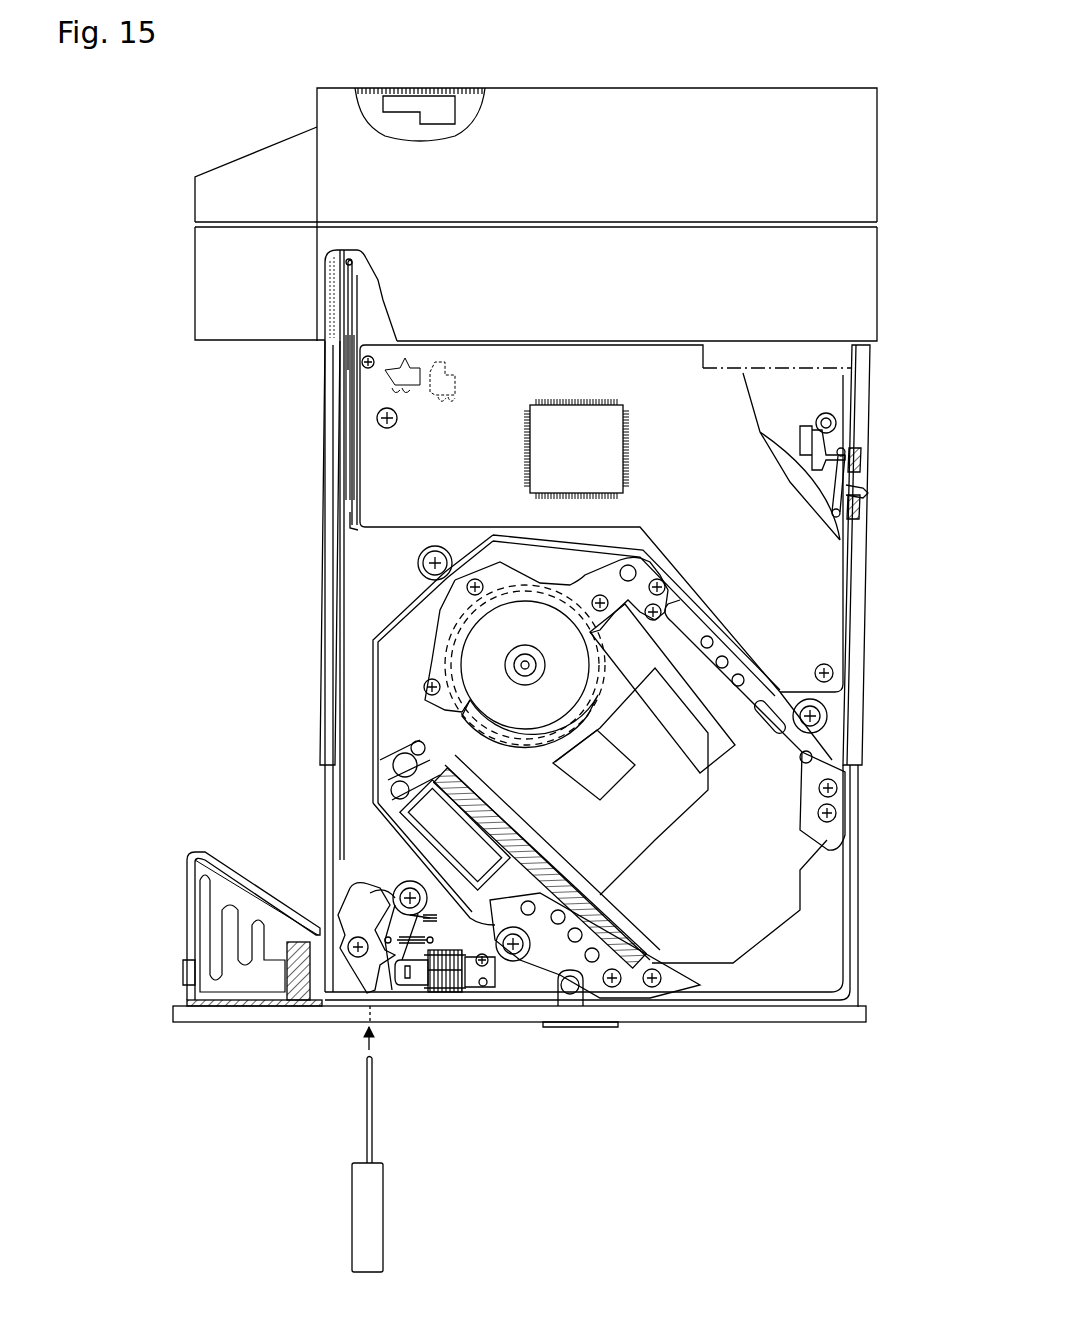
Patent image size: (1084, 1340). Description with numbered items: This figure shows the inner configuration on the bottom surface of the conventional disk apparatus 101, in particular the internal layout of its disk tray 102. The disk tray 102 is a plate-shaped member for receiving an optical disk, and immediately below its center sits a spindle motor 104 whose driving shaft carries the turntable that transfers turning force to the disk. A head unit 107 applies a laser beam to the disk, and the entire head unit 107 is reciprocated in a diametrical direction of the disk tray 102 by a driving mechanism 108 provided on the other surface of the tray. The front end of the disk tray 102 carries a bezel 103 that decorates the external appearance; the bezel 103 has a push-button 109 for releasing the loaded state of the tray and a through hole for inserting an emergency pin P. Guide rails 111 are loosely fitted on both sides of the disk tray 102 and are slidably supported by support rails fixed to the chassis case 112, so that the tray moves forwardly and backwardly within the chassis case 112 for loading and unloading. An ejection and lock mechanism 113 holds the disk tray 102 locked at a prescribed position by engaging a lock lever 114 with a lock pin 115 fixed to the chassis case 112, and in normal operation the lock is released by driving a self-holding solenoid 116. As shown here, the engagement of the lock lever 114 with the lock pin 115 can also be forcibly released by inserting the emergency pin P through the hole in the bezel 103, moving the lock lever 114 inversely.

The disk apparatus 101 is at (875, 583).
The disk tray 102 is at (365, 553).
The bezel 103 is at (510, 1020).
The spindle motor 104 is at (590, 690).
The head unit 107 is at (648, 782).
The driving mechanism 108 is at (435, 826).
The push-button 109 is at (607, 1026).
The guide rails 111 is at (322, 700).
The chassis case 112 is at (845, 299).
The ejection and lock mechanism 113 is at (343, 923).
The lock lever 114 is at (365, 970).
The lock pin 115 is at (360, 307).
The self-holding solenoid 116 is at (445, 1000).
The emergency pin P is at (383, 1190).